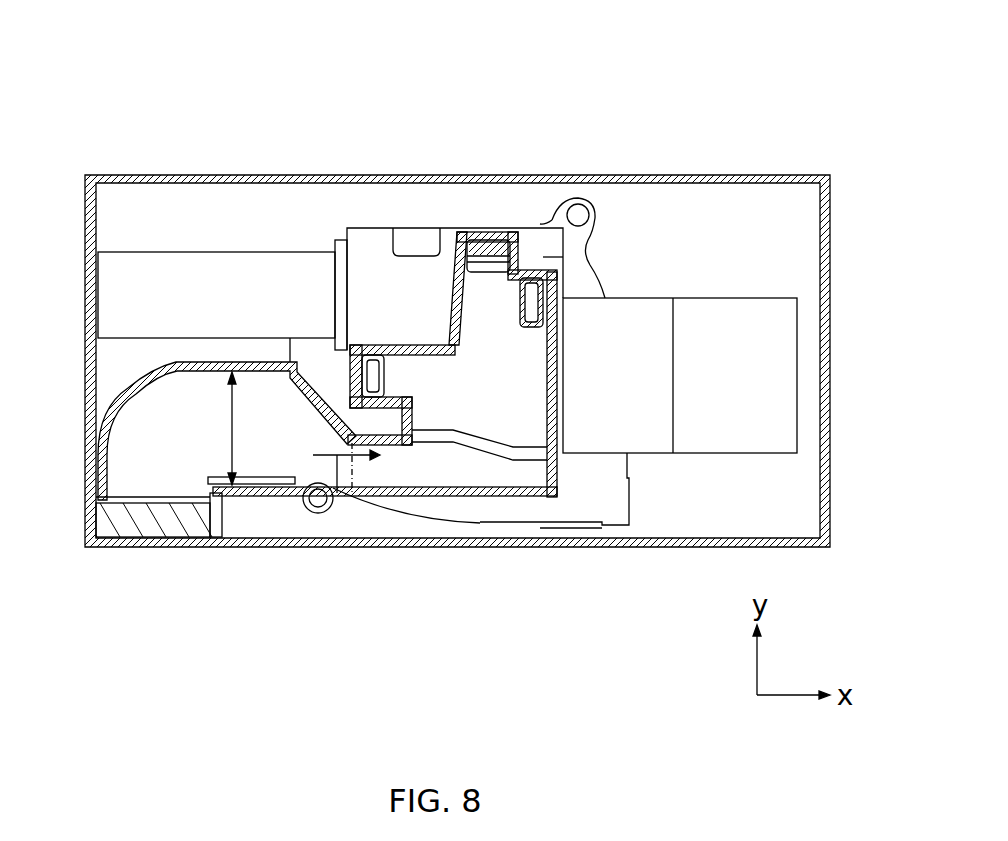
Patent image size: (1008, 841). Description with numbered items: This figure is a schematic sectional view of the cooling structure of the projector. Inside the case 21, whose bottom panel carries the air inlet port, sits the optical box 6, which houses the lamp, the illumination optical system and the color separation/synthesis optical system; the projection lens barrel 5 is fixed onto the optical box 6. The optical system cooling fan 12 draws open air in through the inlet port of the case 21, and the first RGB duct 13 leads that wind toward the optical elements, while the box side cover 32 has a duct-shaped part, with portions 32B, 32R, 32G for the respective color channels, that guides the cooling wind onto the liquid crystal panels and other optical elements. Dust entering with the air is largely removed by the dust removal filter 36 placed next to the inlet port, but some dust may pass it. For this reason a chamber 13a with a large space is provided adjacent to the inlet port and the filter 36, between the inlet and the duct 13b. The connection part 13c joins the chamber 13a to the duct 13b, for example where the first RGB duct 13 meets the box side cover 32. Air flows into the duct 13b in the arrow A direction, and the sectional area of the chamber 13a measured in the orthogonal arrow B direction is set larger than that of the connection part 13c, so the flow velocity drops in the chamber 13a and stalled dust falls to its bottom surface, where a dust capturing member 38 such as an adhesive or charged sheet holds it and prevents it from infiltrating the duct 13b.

The projection lens barrel 5 is at (182, 275).
The optical box 6 is at (630, 408).
The optical system cooling fan 12 is at (582, 290).
The first RGB duct 13 is at (227, 487).
The chamber 13a is at (255, 420).
The duct 13b is at (410, 465).
The connection part 13c is at (355, 462).
The case 21 is at (618, 540).
The box side cover 32 is at (423, 354).
The box side cover duct part for blue 32B is at (487, 250).
The box side cover duct part for red 32R is at (530, 305).
The box side cover duct part for green 32G is at (371, 364).
The dust removal filter 36 is at (166, 520).
The dust capturing member 38 is at (268, 482).
The arrow A direction A is at (307, 495).
The arrow B direction B is at (232, 418).